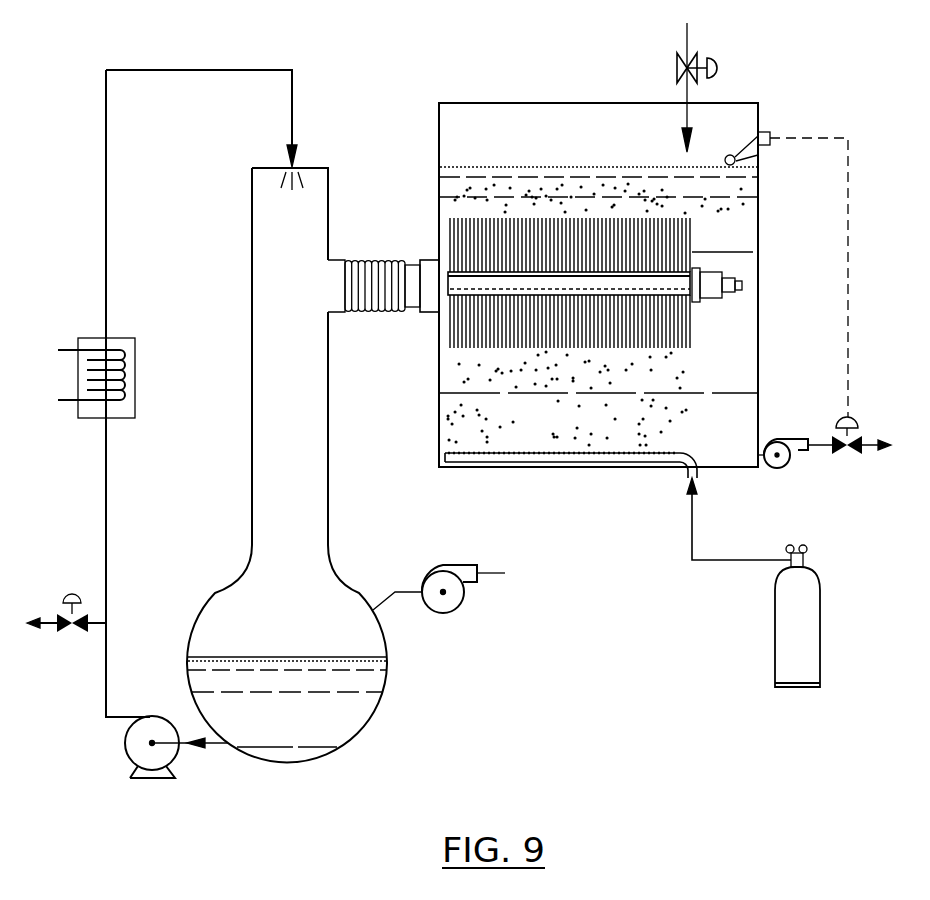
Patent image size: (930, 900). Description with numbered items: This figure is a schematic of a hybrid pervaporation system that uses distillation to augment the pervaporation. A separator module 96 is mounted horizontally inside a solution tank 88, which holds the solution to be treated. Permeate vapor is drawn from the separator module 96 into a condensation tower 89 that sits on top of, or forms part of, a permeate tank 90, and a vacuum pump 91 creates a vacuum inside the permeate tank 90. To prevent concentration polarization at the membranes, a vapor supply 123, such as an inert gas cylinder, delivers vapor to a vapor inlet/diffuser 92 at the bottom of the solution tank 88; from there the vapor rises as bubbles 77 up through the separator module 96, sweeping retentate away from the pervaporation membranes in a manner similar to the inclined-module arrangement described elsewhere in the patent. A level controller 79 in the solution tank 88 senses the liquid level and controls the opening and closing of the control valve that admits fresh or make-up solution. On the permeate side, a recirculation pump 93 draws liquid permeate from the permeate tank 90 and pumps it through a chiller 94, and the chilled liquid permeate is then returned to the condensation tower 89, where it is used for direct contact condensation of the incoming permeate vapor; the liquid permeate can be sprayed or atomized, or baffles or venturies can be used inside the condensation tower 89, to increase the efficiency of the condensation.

The vapor bubbles 77 is at (683, 388).
The level controller 79 is at (758, 158).
The solution tank 88 is at (758, 391).
The condensation tower 89 is at (328, 418).
The permeate tank 90 is at (358, 708).
The vacuum pump 91 is at (455, 590).
The vapor inlet/diffuser 92 is at (697, 472).
The recirculation pump 93 is at (130, 757).
The chiller 94 is at (130, 388).
The separator module 96 is at (706, 243).
The vapor supply 123 is at (780, 600).